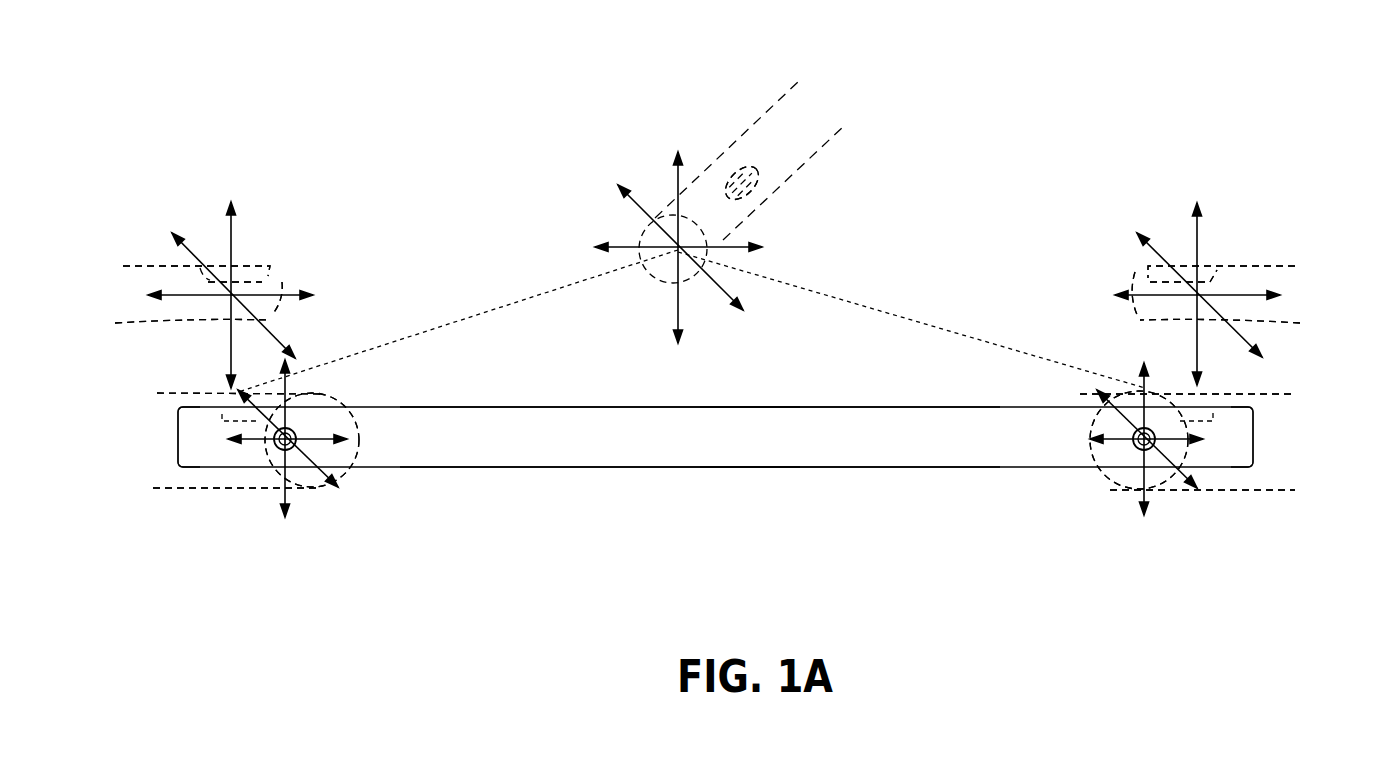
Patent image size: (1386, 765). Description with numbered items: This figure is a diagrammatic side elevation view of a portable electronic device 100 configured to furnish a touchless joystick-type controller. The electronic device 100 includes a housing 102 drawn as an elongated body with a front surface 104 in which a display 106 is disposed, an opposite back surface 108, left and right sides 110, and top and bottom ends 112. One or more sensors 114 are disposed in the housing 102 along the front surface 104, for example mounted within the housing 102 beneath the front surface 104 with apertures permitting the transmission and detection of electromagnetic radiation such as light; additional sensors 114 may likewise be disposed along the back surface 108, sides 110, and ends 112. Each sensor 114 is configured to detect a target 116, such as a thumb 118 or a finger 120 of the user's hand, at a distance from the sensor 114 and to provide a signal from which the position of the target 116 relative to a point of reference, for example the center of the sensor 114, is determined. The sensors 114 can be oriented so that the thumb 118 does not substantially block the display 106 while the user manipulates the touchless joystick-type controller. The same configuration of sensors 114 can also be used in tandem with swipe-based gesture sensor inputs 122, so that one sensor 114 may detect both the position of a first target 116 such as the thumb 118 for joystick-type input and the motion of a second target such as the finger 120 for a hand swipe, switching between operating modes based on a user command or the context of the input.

The electronic device 100 is at (1102, 86).
The housing 102 is at (743, 457).
The front surface 104 is at (810, 400).
The display 106 is at (693, 407).
The back surface 108 is at (892, 475).
The left and right sides 110 is at (510, 443).
The top and bottom ends 112 is at (172, 442).
The sensor 114 is at (222, 420).
The target 116 is at (707, 325).
The thumb 118 is at (277, 271).
The finger 120 is at (317, 398).
The swipe-based gesture sensor inputs 122 is at (660, 153).